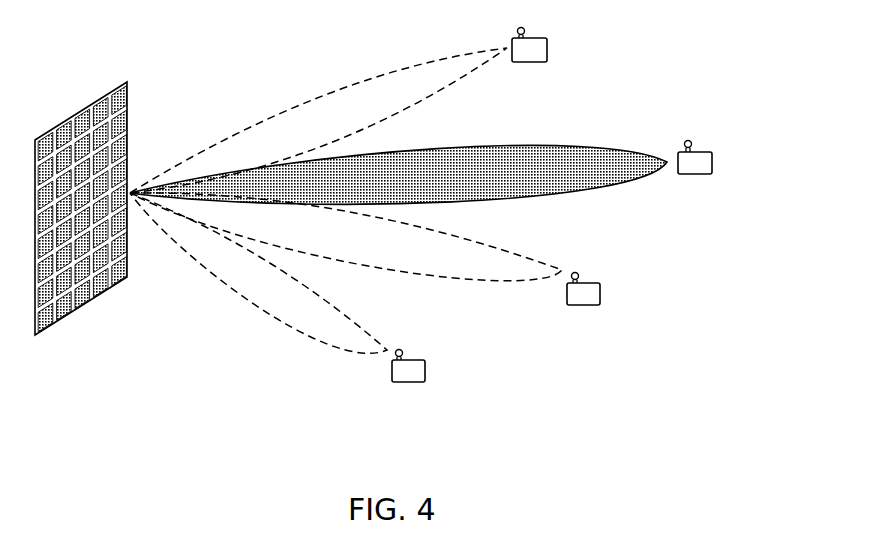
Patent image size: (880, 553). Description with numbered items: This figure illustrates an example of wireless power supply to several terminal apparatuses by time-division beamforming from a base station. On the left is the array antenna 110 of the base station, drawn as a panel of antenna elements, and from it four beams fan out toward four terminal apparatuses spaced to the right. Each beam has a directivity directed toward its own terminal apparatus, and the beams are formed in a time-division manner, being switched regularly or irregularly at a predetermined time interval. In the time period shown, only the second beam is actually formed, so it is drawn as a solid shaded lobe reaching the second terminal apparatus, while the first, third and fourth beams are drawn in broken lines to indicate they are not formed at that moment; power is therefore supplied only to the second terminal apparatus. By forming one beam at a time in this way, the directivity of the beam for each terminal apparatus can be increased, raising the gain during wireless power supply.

The array antenna 110 is at (88, 93).